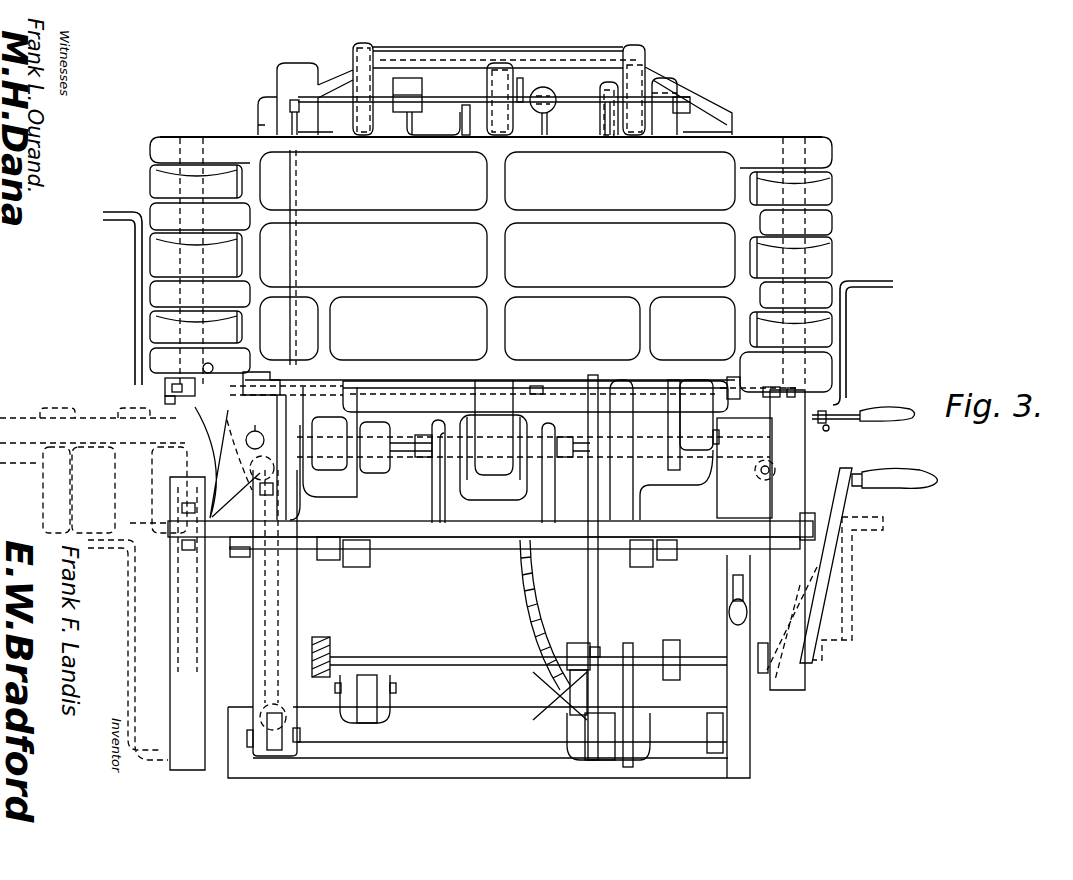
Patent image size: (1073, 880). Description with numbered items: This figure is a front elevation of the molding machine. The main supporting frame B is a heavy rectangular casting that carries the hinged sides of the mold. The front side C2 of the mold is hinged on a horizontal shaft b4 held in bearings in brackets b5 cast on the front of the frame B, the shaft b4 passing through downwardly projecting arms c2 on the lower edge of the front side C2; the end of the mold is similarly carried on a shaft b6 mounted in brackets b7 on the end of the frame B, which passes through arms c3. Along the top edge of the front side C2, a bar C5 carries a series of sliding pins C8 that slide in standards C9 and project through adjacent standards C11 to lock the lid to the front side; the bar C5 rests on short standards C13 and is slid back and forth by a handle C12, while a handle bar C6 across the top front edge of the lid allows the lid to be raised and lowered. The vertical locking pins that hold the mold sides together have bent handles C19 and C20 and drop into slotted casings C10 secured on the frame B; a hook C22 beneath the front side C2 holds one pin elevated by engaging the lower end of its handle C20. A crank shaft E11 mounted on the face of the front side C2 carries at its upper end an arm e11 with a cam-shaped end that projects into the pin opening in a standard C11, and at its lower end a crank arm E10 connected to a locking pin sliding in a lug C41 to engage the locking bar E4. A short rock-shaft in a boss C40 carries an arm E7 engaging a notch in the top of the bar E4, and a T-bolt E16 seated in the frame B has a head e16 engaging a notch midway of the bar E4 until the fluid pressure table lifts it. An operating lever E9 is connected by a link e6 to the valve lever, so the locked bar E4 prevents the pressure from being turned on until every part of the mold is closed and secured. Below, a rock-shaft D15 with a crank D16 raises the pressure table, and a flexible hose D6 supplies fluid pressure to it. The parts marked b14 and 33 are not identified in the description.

The front side of the mold C2 is at (491, 264).
The handle bar C6 is at (195, 139).
The bar C5 is at (832, 202).
The crank shaft E11 is at (297, 266).
The handle C20 is at (138, 608).
The handle C19 is at (843, 320).
The casing C10 is at (820, 460).
The cam arm e11 is at (293, 100).
The standards C11 is at (335, 122).
The sliding pins C8 is at (420, 95).
The standards C9 is at (405, 121).
The short standards C13 is at (565, 108).
The handle C12 is at (549, 96).
The locking bar E4 is at (535, 396).
The crank arm E10 is at (286, 399).
The T-bolt E16 is at (753, 371).
The projecting arm E7 is at (730, 380).
The boss C40 is at (773, 388).
The lug C41 is at (258, 377).
The head of T-bolt e16 is at (538, 388).
The hook C22 is at (170, 404).
The downwardly projecting arms c2 is at (415, 440).
The downwardly projecting arms c3 is at (258, 457).
The horizontal shaft b6 is at (259, 457).
The brackets or standards b7 is at (227, 462).
The main supporting frame B is at (375, 461).
The shaft b14 is at (405, 455).
The supporting lugs or brackets b5 is at (287, 483).
The horizontal shaft b4 is at (726, 438).
The operating lever E9 is at (906, 398).
The link e6 is at (830, 428).
The crank D16 is at (817, 563).
The rock-shaft D15 is at (417, 653).
The flexible pipe or hose D6 is at (524, 600).
The rack 33 is at (93, 470).